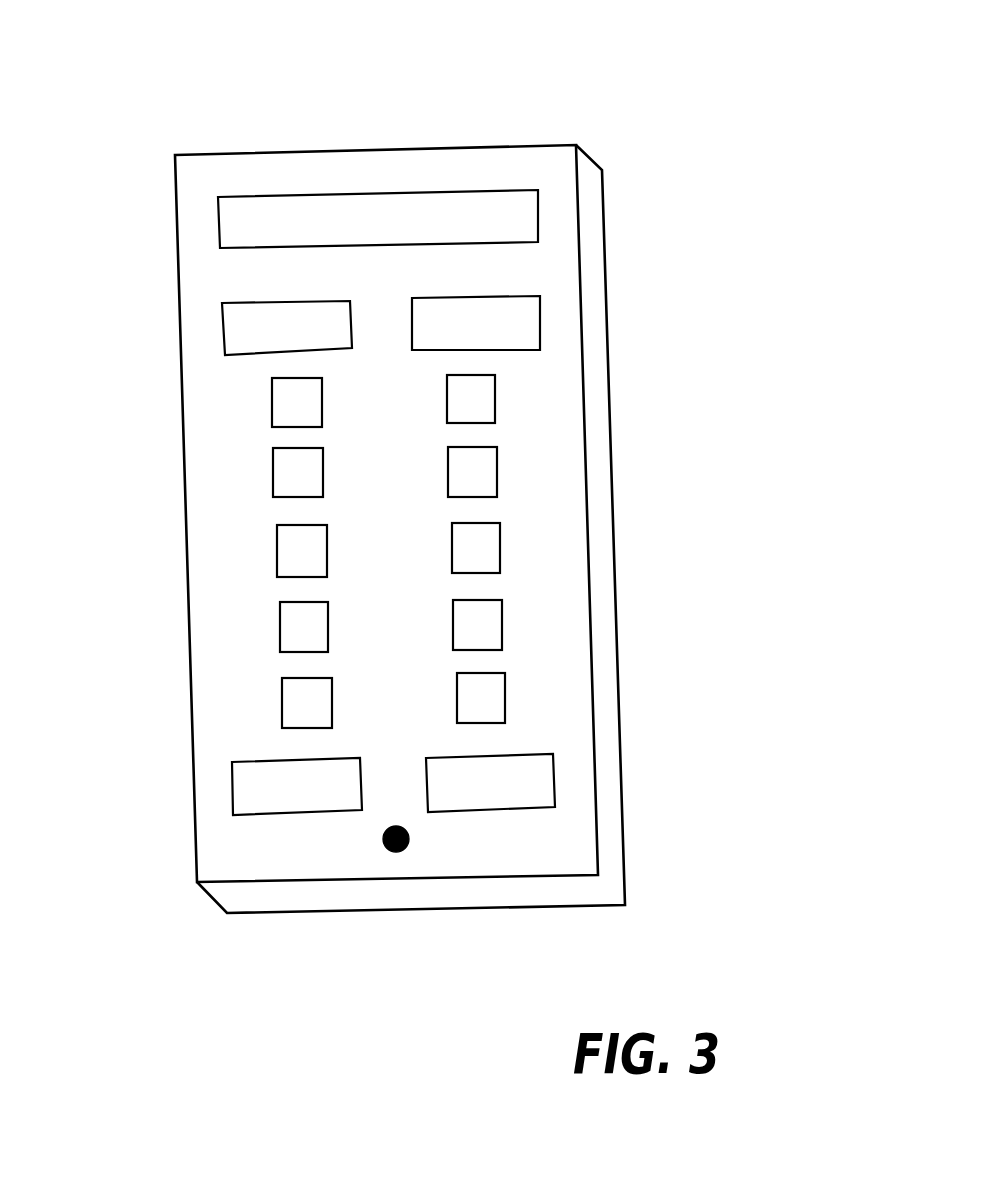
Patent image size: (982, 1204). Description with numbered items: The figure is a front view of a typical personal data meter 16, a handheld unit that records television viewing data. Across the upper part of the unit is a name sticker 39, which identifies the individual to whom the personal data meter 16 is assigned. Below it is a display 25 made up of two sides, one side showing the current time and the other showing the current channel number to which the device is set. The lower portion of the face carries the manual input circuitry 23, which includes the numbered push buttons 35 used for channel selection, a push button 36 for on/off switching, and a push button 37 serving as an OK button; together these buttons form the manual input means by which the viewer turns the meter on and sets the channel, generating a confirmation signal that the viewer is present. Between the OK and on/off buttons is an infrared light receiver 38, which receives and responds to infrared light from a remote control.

The personal data meter 16 is at (387, 88).
The name sticker 39 is at (538, 220).
The display 25 is at (352, 343).
The manual input circuitry 23 is at (381, 581).
The push buttons for channel selection 35 is at (278, 623).
The OK push button 37 is at (290, 815).
The infrared light receiver 38 is at (397, 853).
The on/off push button 36 is at (500, 812).